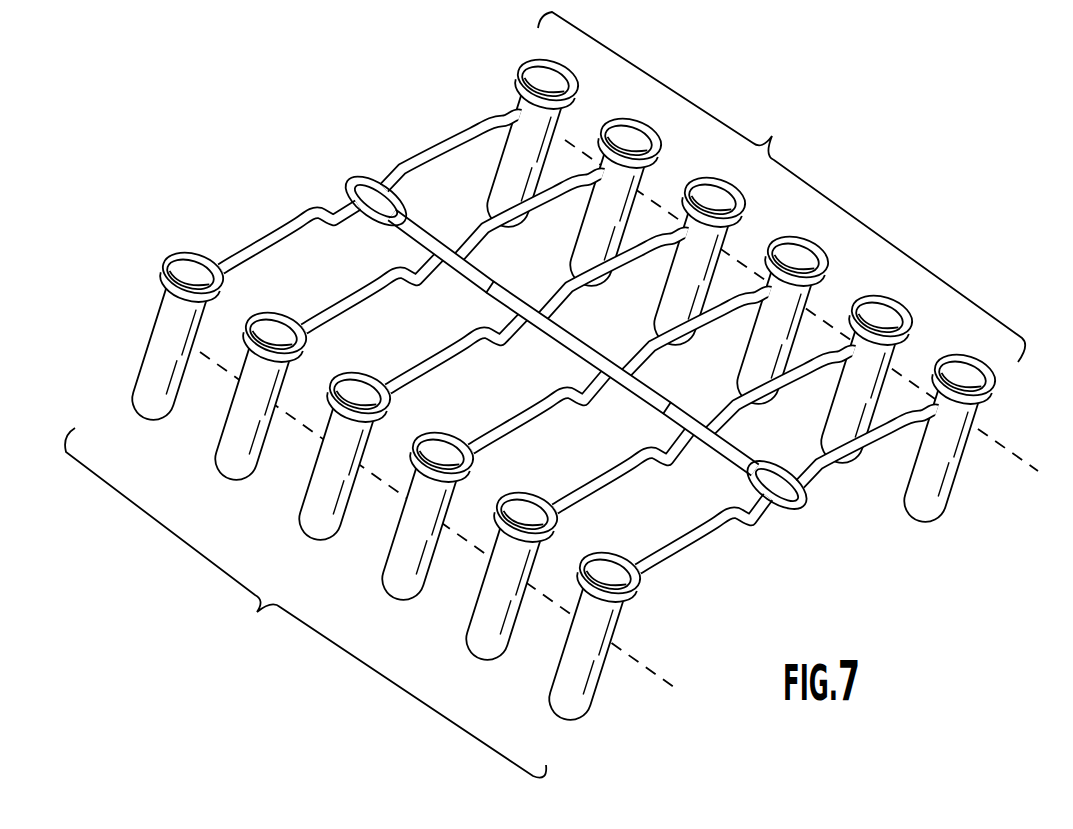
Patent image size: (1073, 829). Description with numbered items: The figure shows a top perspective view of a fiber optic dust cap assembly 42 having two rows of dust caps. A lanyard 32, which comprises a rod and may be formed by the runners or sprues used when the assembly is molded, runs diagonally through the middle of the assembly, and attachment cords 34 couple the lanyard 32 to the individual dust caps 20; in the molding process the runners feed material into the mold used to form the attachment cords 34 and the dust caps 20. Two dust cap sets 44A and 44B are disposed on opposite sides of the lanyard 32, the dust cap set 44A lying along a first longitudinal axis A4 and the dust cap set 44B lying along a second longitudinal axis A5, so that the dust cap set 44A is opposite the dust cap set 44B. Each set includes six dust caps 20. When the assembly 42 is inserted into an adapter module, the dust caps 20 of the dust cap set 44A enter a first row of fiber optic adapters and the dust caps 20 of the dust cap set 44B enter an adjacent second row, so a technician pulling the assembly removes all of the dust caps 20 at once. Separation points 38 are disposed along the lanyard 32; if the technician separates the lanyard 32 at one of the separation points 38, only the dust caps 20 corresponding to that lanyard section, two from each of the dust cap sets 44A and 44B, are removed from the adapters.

The dust caps 20 is at (162, 327).
The lanyard 32 is at (366, 183).
The attachment cords 34 is at (462, 126).
The separation points 38 is at (492, 283).
The fiber optic dust cap assembly 42 is at (288, 140).
The dust cap set 44A is at (305, 603).
The dust cap set 44B is at (781, 187).
The first longitudinal axis A4 is at (458, 538).
The second longitudinal axis A5 is at (819, 323).